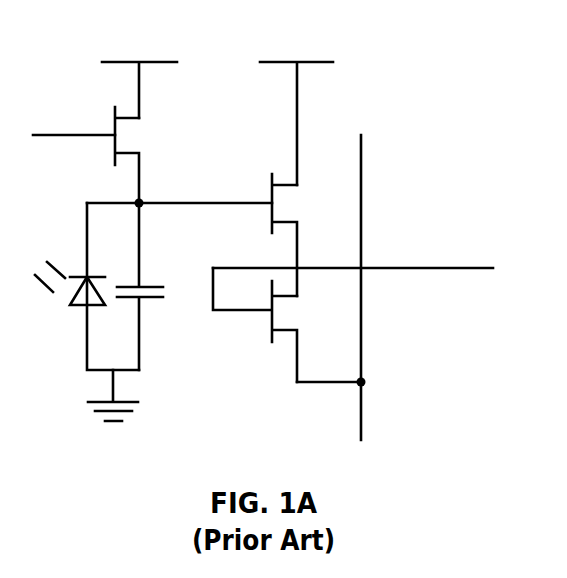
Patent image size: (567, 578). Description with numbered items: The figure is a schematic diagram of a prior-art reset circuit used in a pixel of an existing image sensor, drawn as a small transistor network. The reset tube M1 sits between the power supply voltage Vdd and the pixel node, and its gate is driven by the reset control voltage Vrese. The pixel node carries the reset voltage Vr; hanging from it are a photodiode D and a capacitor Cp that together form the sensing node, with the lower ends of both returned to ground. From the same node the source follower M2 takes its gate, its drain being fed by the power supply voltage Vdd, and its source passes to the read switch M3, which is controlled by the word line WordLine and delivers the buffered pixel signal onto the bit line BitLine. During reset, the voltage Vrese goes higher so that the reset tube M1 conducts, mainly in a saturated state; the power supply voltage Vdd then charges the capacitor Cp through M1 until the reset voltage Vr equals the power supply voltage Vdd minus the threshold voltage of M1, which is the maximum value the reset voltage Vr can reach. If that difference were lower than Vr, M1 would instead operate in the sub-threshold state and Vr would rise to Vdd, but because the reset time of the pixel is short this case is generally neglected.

The power supply voltage Vdd is at (217, 106).
The reset control voltage Vrese is at (74, 117).
The reset tube M1 is at (145, 155).
The reset voltage Vr is at (179, 225).
The photodiode D is at (87, 286).
The capacitor Cp is at (150, 286).
The source follower M2 is at (302, 235).
The read switch M3 is at (273, 325).
The word line WordLine is at (361, 248).
The bit line BitLine is at (388, 287).